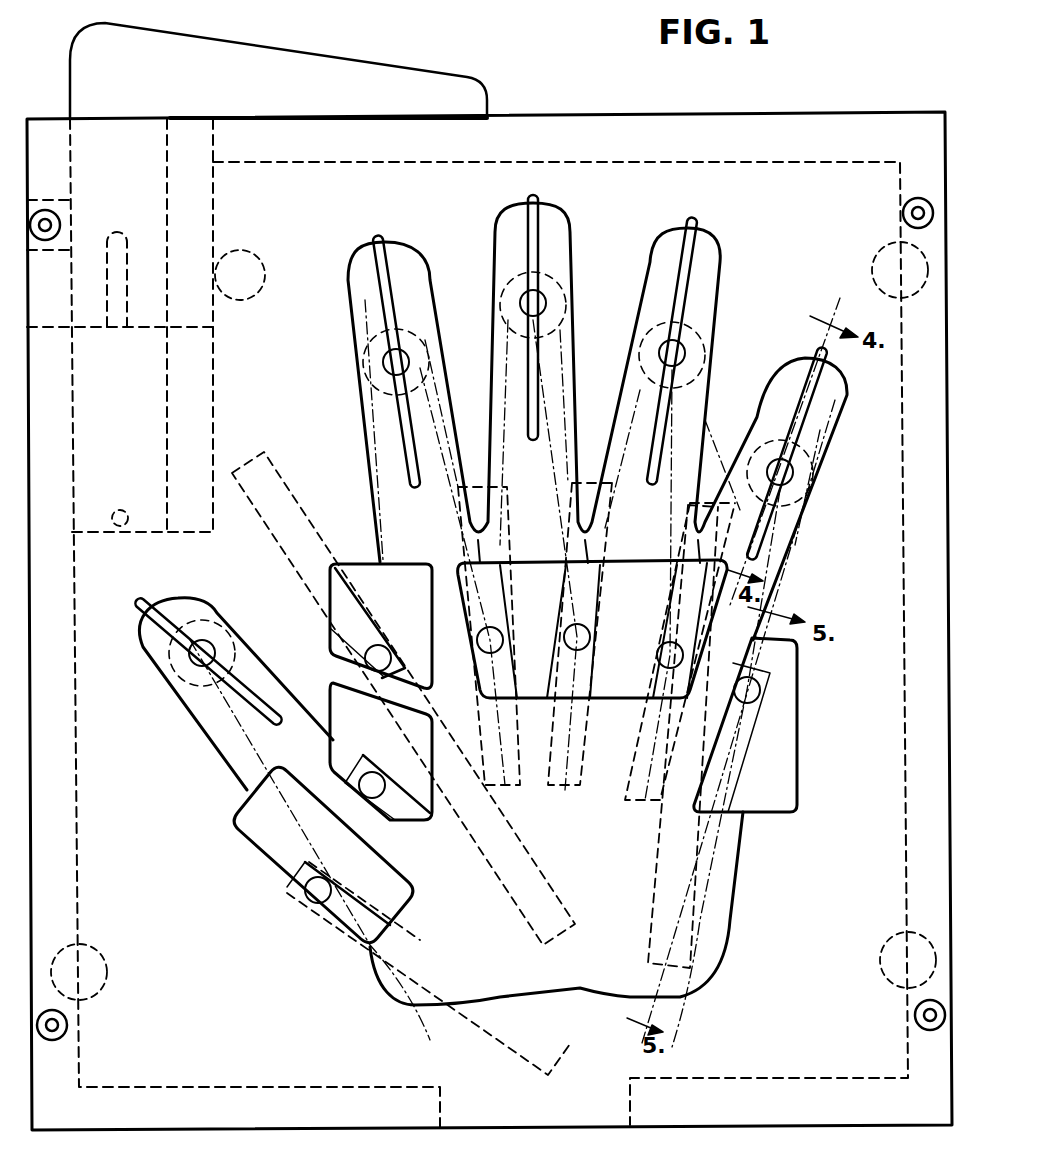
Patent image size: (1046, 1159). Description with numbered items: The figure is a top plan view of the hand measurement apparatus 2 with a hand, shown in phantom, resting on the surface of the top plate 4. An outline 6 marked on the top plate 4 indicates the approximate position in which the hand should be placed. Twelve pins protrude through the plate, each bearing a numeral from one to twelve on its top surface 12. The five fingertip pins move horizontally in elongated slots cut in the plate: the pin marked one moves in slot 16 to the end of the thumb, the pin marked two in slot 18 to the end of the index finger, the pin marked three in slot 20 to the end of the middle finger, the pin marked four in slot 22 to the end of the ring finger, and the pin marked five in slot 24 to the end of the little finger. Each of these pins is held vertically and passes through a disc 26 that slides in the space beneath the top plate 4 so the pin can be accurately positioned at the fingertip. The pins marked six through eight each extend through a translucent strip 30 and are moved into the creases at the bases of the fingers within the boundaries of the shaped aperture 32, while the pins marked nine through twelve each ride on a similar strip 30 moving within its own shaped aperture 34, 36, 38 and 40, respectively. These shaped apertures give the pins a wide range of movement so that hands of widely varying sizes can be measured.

The hand measurement apparatus 2 is at (805, 99).
The top plate 4 is at (515, 118).
The outline 6 is at (350, 301).
The top surface 12 is at (795, 1150).
The slot 16 is at (148, 603).
The slot 18 is at (380, 242).
The slot 20 is at (540, 205).
The slot 22 is at (700, 222).
The slot 24 is at (827, 357).
The disc 26 is at (225, 620).
The strip 30 is at (640, 968).
The shaped aperture 32 is at (705, 633).
The shaped aperture 34 is at (432, 768).
The shaped aperture 36 is at (432, 676).
The shaped aperture 38 is at (273, 848).
The shaped aperture 40 is at (797, 752).